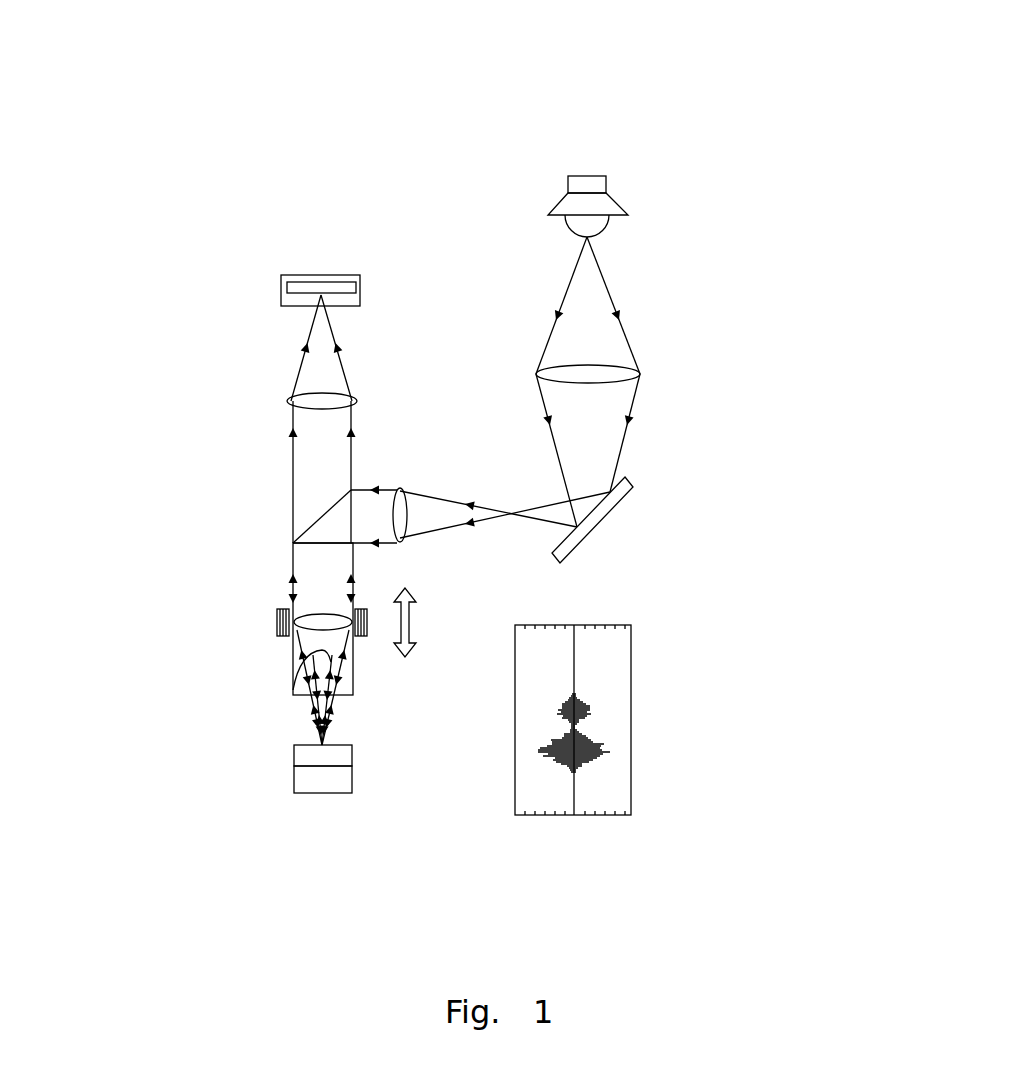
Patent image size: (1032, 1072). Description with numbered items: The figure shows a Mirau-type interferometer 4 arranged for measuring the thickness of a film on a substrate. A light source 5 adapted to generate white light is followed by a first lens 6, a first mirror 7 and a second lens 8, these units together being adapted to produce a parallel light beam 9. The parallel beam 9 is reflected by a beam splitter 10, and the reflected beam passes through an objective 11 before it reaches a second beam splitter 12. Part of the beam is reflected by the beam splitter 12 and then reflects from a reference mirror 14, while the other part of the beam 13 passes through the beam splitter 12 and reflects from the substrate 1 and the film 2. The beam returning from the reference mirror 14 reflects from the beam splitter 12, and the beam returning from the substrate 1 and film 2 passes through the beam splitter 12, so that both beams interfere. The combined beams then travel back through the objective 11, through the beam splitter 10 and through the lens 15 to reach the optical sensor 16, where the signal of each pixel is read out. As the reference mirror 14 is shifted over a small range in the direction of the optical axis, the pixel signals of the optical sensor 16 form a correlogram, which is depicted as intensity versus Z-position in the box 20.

The substrate 1 is at (316, 790).
The film 2 is at (347, 752).
The interferometer 4 is at (566, 117).
The light source 5 is at (612, 207).
The first lens 6 is at (640, 374).
The first mirror 7 is at (607, 517).
The second lens 8 is at (400, 490).
The parallel light beam 9 is at (379, 513).
The beam splitter 10 is at (310, 526).
The objective 11 is at (277, 620).
The second beam splitter 12 is at (297, 697).
The beam 13 is at (294, 718).
The reference mirror 14 is at (293, 690).
The lens 15 is at (290, 400).
The optical sensor 16 is at (282, 278).
The box 20 is at (632, 812).